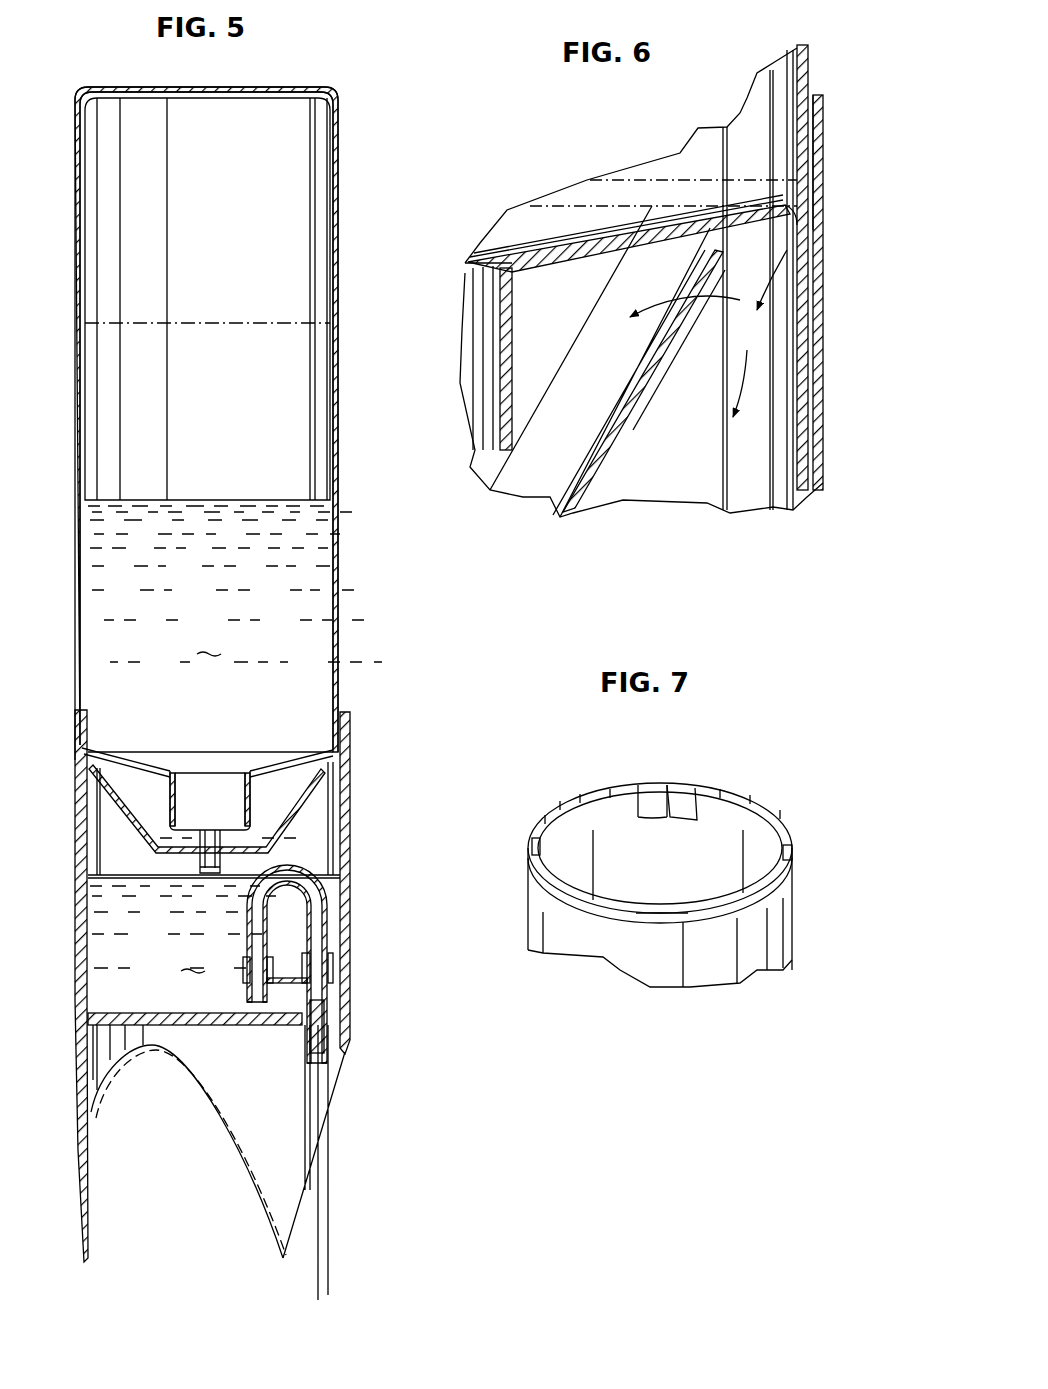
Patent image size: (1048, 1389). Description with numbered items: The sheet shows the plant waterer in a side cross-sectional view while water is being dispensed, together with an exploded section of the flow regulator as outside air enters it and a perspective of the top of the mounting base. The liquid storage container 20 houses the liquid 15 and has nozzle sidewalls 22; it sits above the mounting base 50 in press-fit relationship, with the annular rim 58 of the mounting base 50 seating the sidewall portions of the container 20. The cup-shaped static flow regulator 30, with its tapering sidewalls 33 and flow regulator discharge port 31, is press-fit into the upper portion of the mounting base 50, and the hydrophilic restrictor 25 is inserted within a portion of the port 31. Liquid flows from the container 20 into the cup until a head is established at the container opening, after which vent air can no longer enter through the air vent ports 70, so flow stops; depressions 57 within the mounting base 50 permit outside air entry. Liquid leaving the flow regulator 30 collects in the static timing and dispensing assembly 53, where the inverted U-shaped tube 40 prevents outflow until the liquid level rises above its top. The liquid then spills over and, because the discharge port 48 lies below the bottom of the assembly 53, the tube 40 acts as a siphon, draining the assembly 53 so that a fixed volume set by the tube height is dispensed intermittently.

In FIG. 5, the liquid 15 is at (235, 584).
In FIG. 5, the liquid storage container 20 is at (346, 576).
In FIG. 6, the liquid storage container 20 is at (580, 233).
In FIG. 5, the nozzle sidewalls 22 is at (168, 800).
In FIG. 6, the nozzle sidewalls 22 is at (483, 353).
In FIG. 5, the hydrophilic restrictor 25 is at (220, 842).
In FIG. 5, the flow regulator 30 is at (137, 833).
In FIG. 5, the flow regulator discharge port 31 is at (198, 860).
In FIG. 6, the tapering sidewalls 33 is at (633, 430).
In FIG. 5, the inverted U-shaped tube 40 is at (305, 856).
In FIG. 5, the outlet or discharge port 48 is at (343, 1053).
In FIG. 5, the mounting base 50 is at (352, 983).
In FIG. 6, the mounting base 50 is at (805, 383).
In FIG. 7, the mounting base 50 is at (796, 922).
In FIG. 5, the timing and dispensing assembly 53 is at (183, 929).
In FIG. 6, the depressions 57 is at (813, 167).
In FIG. 7, the depressions 57 is at (655, 790).
In FIG. 7, the annular rim 58 is at (696, 820).
In FIG. 5, the air vent ports 70 is at (80, 808).
In FIG. 6, the air vent ports 70 is at (707, 240).